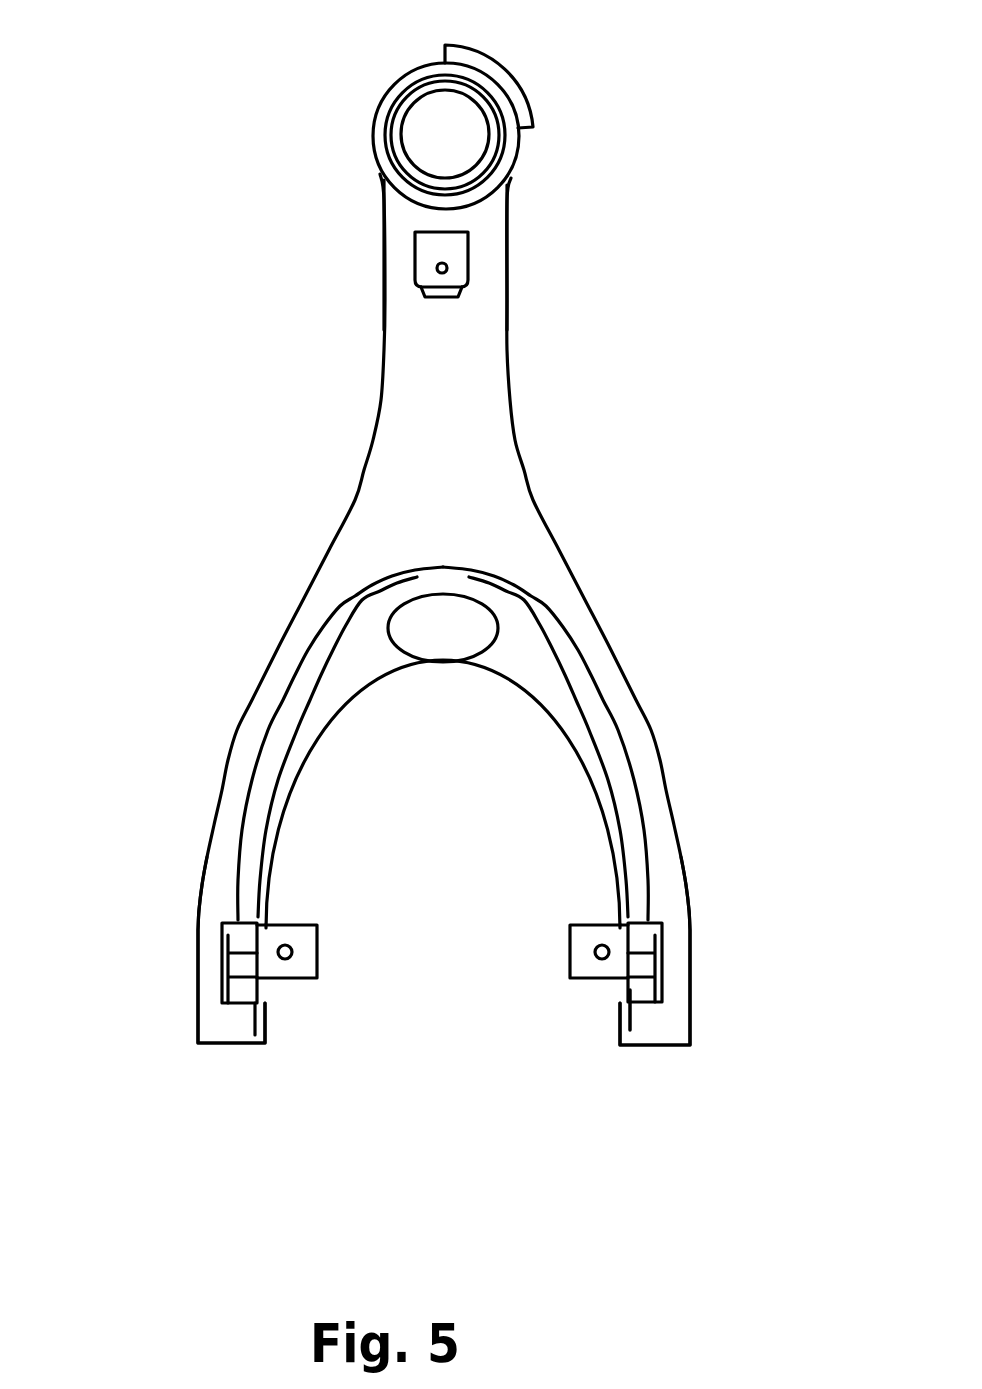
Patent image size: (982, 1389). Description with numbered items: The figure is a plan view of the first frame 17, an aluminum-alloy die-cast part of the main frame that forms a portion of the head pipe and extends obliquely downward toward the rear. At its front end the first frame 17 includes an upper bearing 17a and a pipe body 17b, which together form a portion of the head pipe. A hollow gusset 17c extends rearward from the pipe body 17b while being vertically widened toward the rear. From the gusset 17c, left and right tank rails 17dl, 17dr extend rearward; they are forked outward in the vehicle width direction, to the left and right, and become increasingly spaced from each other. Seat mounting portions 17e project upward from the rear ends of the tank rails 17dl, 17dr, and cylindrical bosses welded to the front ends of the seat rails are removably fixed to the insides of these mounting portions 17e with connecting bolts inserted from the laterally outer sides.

The first frame 17 is at (675, 707).
The upper bearing 17a is at (385, 90).
The pipe body 17b is at (513, 184).
The hollow gusset 17c is at (517, 425).
The left tank rail 17dl is at (207, 858).
The right tank rail 17dr is at (680, 857).
The seat mounting portion 17e is at (660, 970).